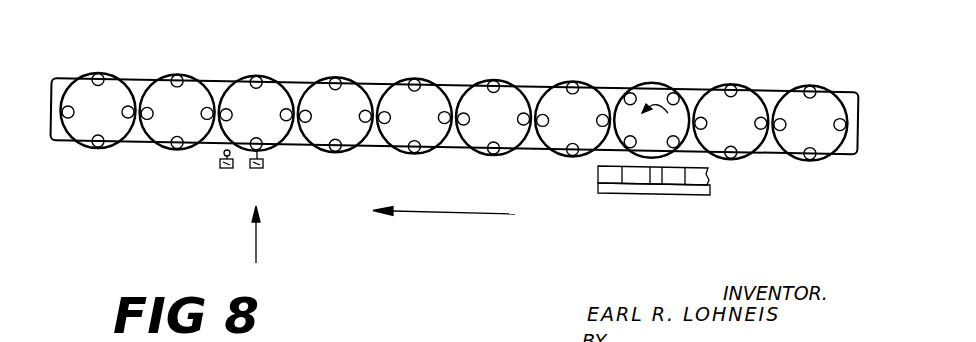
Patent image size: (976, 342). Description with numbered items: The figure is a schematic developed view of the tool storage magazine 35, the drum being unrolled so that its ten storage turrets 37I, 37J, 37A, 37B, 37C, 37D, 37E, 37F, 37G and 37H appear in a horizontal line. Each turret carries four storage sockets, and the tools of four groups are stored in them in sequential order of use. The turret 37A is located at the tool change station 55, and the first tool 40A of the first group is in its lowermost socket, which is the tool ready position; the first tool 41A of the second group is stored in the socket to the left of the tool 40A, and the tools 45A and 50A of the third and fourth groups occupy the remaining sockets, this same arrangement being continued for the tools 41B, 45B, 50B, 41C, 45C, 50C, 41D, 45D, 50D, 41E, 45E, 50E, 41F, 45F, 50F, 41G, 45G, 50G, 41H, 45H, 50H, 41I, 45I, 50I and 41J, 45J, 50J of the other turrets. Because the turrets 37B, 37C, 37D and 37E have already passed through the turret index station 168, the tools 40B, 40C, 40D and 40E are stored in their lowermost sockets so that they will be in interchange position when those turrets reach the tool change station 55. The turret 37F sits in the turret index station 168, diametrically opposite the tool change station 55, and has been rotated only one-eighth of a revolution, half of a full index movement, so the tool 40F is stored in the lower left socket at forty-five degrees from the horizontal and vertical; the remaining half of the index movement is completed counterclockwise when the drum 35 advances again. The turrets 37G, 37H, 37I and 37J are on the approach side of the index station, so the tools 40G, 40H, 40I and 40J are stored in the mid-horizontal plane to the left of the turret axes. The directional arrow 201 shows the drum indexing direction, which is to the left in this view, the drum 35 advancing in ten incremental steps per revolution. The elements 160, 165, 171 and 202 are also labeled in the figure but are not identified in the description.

The magazine 35 is at (444, 141).
The turret 37I is at (79, 144).
The turret 37J is at (160, 146).
The turret 37A is at (243, 152).
The turret 37B is at (328, 155).
The turret 37C is at (403, 152).
The turret 37D is at (478, 153).
The turret 37E is at (560, 157).
The turret 37F is at (664, 139).
The turret 37G is at (745, 145).
The turret 37H is at (818, 148).
The tool 40I is at (66, 106).
The tool 40J is at (148, 108).
The tool 40A is at (262, 148).
The tool 40B is at (336, 151).
The tool 40C is at (415, 152).
The tool 40D is at (496, 153).
The tool 40E is at (572, 155).
The tool 40F is at (630, 148).
The tool 40G is at (732, 85).
The tool 40H is at (782, 118).
The tool 41I is at (100, 74).
The tool 41J is at (180, 76).
The tool 41A is at (259, 76).
The tool 41B is at (307, 110).
The tool 41C is at (386, 112).
The tool 41D is at (465, 113).
The tool 41E is at (545, 115).
The tool 41F is at (634, 93).
The tool 41G is at (705, 118).
The tool 41H is at (814, 86).
The tool 45I is at (122, 110).
The tool 45J is at (201, 112).
The tool 45A is at (282, 108).
The tool 45B is at (338, 78).
The tool 45C is at (417, 80).
The tool 45D is at (498, 82).
The tool 45E is at (577, 84).
The tool 45F is at (675, 94).
The tool 45G is at (755, 123).
The tool 45H is at (834, 124).
The tool 50I is at (98, 147).
The tool 50J is at (176, 149).
The tool 50A is at (280, 112).
The tool 50B is at (359, 115).
The tool 50C is at (438, 117).
The tool 50D is at (518, 119).
The tool 50E is at (597, 120).
The tool 50F is at (675, 148).
The tool 50G is at (730, 158).
The tool 50H is at (808, 160).
The tool change station 55 is at (253, 246).
The sensing switch 160 is at (220, 167).
The sensing switch 165 is at (255, 169).
The turret index station 168 is at (653, 205).
The rack guide rail 171 is at (687, 199).
The directional arrow 201 is at (453, 214).
The disc rotation arrow 202 is at (650, 107).